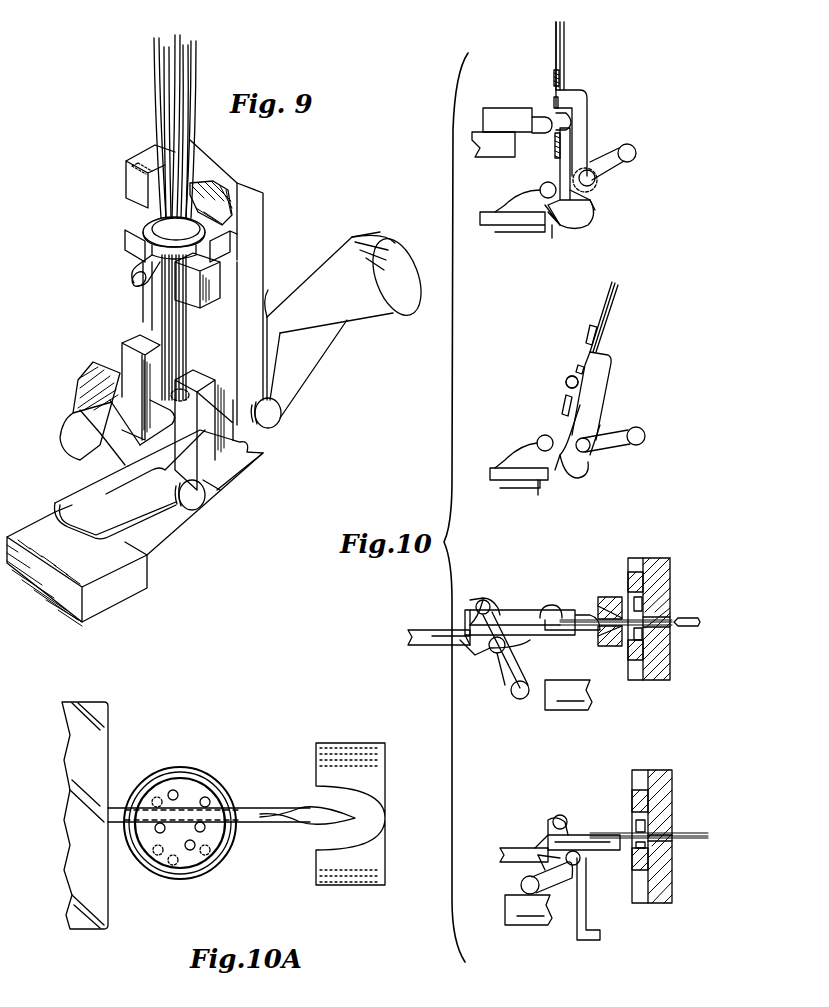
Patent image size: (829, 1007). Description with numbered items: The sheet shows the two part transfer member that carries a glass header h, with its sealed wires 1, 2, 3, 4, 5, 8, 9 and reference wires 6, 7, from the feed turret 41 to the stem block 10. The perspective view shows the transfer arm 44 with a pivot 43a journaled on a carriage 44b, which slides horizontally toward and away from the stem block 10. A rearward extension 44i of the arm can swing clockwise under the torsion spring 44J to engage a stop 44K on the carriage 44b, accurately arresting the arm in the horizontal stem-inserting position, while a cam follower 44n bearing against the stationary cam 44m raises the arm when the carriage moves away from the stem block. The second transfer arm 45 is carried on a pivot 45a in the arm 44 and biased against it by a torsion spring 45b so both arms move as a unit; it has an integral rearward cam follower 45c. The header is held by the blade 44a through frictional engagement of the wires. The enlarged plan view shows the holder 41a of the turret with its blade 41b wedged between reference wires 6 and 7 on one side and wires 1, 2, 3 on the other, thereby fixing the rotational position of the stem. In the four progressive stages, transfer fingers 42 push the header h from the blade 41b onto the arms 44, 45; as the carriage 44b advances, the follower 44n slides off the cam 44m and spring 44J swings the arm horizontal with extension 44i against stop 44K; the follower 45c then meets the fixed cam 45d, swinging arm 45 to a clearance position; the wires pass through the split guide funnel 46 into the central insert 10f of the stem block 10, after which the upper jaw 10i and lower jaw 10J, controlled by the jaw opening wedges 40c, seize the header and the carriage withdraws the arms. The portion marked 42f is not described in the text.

In FIG. 9, the glass header h is at (142, 226).
In FIG. 10, the glass header h is at (572, 372).
In FIG. 9, the transfer arm 45 is at (255, 228).
In FIG. 10, the transfer arm 45 is at (588, 98).
In FIG. 9, the pivot 45a is at (282, 416).
In FIG. 10, the pivot 45a is at (588, 168).
In FIG. 9, the torsion spring 45b is at (271, 356).
In FIG. 9, the cam follower 45c is at (398, 313).
In FIG. 10, the cam follower 45c is at (636, 153).
In FIG. 10, the fixed cam 45d is at (548, 802).
In FIG. 9, the transfer arm 44 is at (228, 295).
In FIG. 10, the transfer arm 44 is at (570, 455).
In FIG. 10A, the transfer arm 44 is at (318, 763).
In FIG. 9, the blade 44a is at (130, 275).
In FIG. 10, the blade 44a is at (570, 120).
In FIG. 10A, the blade 44a is at (328, 815).
In FIG. 9, the carriage 44b is at (62, 606).
In FIG. 10, the carriage 44b is at (520, 226).
In FIG. 9, the rearward extension 44i is at (263, 455).
In FIG. 10, the rearward extension 44i is at (580, 186).
In FIG. 9, the torsion spring 44J is at (185, 505).
In FIG. 10, the torsion spring 44J is at (540, 190).
In FIG. 9, the stop 44K is at (148, 558).
In FIG. 10, the stop 44K is at (572, 226).
In FIG. 10, the stationary cam 44m is at (552, 232).
In FIG. 9, the cam follower 44n is at (100, 362).
In FIG. 10, the cam follower 44n is at (585, 205).
In FIG. 9, the pivot 43a is at (205, 500).
In FIG. 10, the pivot 43a is at (540, 186).
In FIG. 10, the turret 41 is at (500, 153).
In FIG. 10, the holder 41a is at (500, 114).
In FIG. 10A, the holder 41a is at (100, 752).
In FIG. 10, the blade 41b is at (546, 133).
In FIG. 10A, the blade 41b is at (262, 803).
In FIG. 10, the transfer fingers 42 is at (553, 76).
In FIG. 10, the stop portion 42f is at (553, 100).
In FIG. 10, the split guide funnel 46 is at (598, 600).
In FIG. 10, the reference wire 6 is at (566, 50).
In FIG. 10A, the reference wire 6 is at (203, 832).
In FIG. 10, the reference wire 7 is at (555, 50).
In FIG. 10A, the reference wire 7 is at (158, 832).
In FIG. 10, the stem block 10 is at (652, 544).
In FIG. 10, the upper jaw 10i is at (632, 588).
In FIG. 10, the lower jaw 10J is at (632, 650).
In FIG. 10, the central insert 10f is at (669, 618).
In FIG. 10, the jaw opening wedges 40c is at (690, 627).
In FIG. 10A, the wire 1 is at (207, 797).
In FIG. 10A, the wire 2 is at (174, 790).
In FIG. 10A, the wire 3 is at (154, 797).
In FIG. 10A, the wire 4 is at (154, 856).
In FIG. 10A, the wire 5 is at (210, 855).
In FIG. 10A, the wire 8 is at (191, 850).
In FIG. 10A, the wire 9 is at (172, 865).